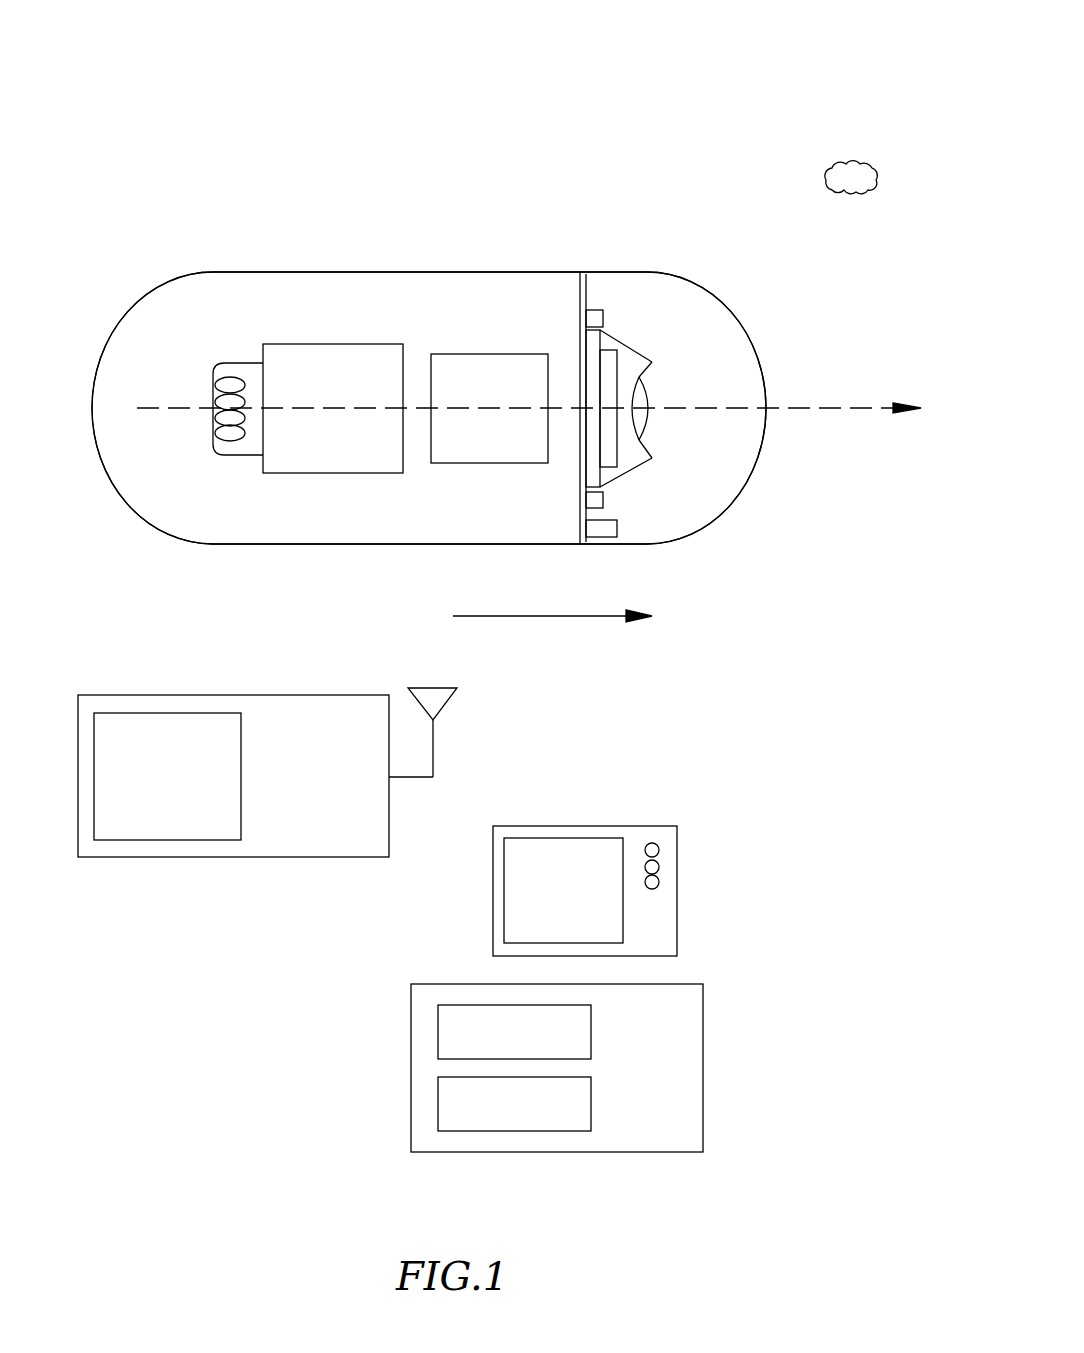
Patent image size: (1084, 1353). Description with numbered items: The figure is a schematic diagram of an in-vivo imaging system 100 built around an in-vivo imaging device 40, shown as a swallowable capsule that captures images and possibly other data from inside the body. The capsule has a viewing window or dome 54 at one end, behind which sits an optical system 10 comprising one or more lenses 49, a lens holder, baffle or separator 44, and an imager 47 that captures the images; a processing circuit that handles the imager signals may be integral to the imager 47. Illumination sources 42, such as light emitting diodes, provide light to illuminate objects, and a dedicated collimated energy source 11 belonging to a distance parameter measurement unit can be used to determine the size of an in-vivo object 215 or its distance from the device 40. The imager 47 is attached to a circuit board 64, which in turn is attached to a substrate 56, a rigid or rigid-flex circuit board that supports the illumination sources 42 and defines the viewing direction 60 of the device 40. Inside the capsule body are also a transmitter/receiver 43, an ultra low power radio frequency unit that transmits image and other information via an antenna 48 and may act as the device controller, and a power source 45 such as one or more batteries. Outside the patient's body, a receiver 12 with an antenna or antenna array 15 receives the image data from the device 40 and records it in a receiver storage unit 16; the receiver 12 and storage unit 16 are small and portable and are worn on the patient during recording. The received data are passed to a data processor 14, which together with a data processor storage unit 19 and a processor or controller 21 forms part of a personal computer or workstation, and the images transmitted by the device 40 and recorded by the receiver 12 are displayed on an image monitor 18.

The in-vivo imaging system 100 is at (746, 72).
The optical system 10 is at (730, 266).
The in-vivo imaging device 40 is at (172, 195).
The object 215 is at (841, 162).
The antenna 48 is at (220, 365).
The transmitter/receiver 43 is at (333, 344).
The power source 45 is at (490, 354).
The substrate 56 is at (578, 318).
The illumination source 42 is at (595, 310).
The collimated energy source 11 is at (617, 527).
The lens holder, baffle, or separator 44 is at (629, 363).
The imager 47 is at (617, 458).
The lens 49 is at (652, 400).
The viewing window or dome 54 is at (672, 275).
The circuit board 64 is at (603, 484).
The viewing direction 60 is at (553, 617).
The receiver 12 is at (268, 695).
The receiver storage unit 16 is at (168, 840).
The antenna or antenna array 15 is at (433, 687).
The image monitor 18 is at (680, 892).
The data processor 14 is at (748, 980).
The processor or controller 21 is at (591, 1036).
The data processor storage unit 19 is at (591, 1108).